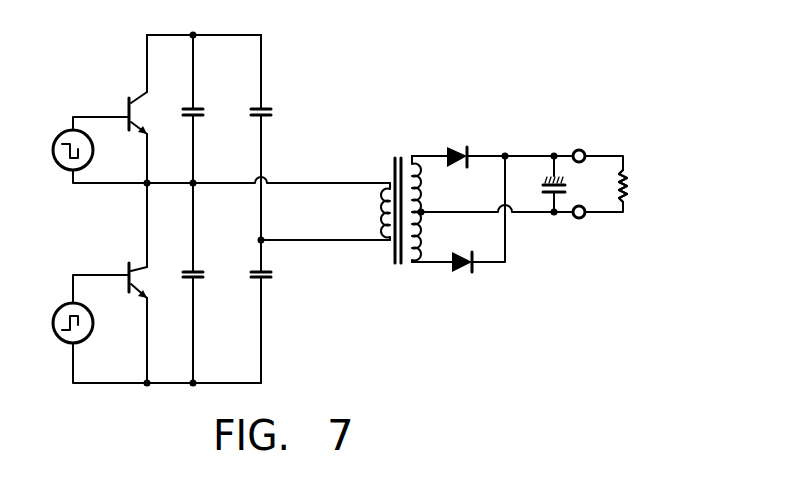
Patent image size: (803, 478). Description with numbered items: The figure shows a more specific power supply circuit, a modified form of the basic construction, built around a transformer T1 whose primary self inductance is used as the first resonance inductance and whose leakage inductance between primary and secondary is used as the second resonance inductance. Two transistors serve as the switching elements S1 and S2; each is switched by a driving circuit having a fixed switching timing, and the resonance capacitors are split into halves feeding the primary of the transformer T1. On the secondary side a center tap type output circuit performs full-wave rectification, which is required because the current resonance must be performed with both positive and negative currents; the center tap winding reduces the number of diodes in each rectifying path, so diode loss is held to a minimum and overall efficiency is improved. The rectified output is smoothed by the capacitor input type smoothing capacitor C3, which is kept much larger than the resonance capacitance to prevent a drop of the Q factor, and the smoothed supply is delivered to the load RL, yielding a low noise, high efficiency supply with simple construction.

The switching element S1 is at (128, 103).
The switching element S2 is at (128, 268).
The transformer T1 is at (400, 155).
The smoothing capacitor C3 is at (549, 192).
The load RL is at (628, 179).